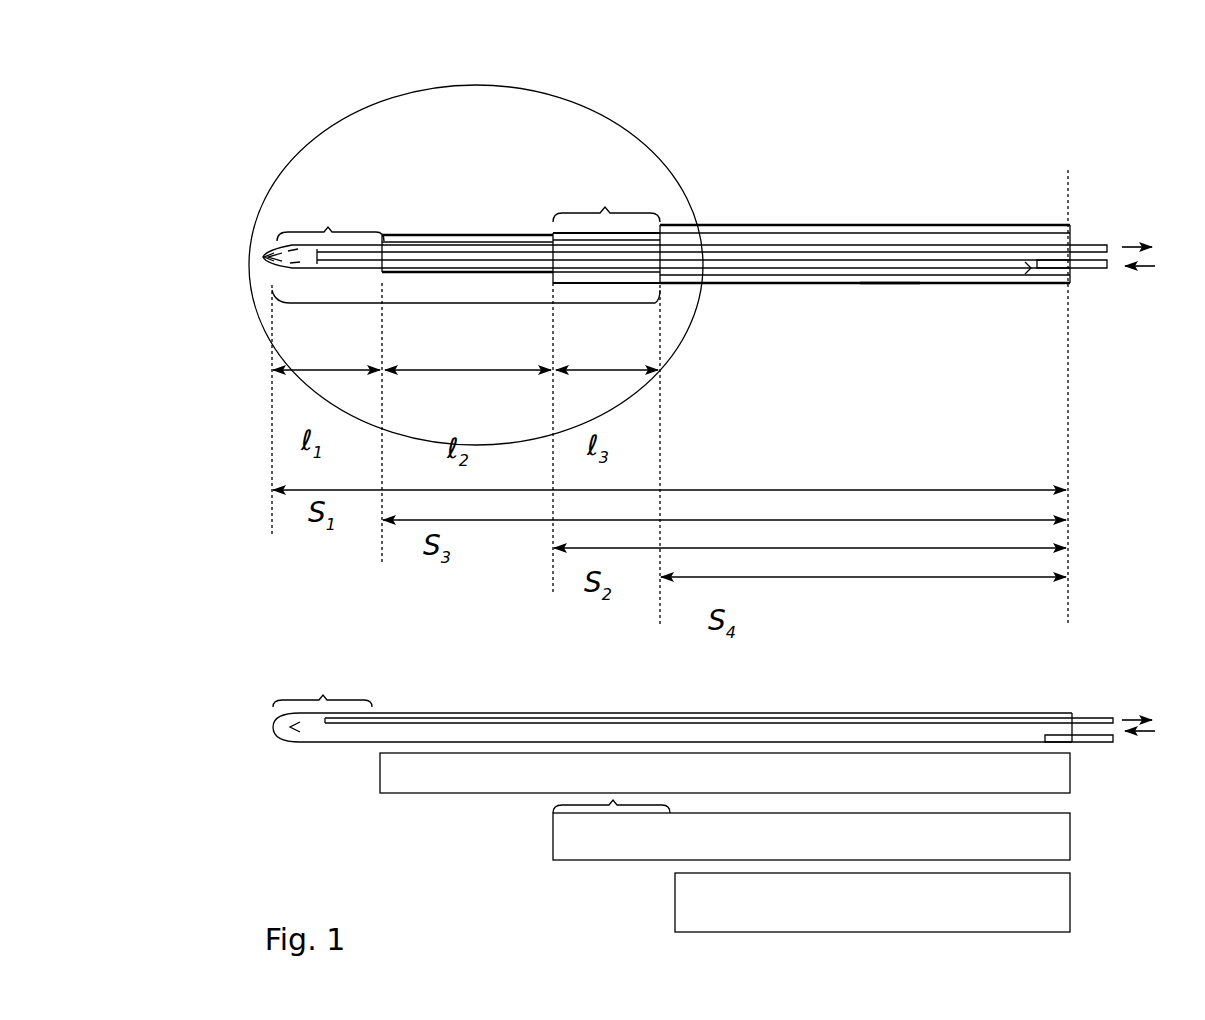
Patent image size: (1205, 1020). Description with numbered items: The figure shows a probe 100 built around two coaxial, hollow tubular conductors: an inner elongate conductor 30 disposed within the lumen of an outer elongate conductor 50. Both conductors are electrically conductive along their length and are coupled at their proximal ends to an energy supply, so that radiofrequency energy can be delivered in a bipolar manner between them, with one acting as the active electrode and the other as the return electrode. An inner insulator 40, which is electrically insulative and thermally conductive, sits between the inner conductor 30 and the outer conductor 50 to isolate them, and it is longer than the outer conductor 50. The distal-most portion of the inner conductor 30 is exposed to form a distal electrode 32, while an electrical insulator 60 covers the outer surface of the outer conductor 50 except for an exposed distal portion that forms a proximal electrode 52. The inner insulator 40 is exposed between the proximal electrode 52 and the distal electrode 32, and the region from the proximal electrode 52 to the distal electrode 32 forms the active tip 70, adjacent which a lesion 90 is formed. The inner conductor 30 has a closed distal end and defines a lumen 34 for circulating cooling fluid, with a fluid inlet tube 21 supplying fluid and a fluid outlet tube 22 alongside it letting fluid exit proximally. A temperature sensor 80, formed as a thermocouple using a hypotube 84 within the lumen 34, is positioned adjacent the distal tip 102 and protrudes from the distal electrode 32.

The fluid inlet tube 21 is at (1078, 269).
The fluid outlet tube 22 is at (1074, 243).
The inner elongate conductor 30 is at (386, 231).
The distal electrode 32 is at (327, 226).
The lumen 34 is at (1028, 270).
The inner insulator 40 is at (487, 233).
The outer elongate conductor 50 is at (708, 226).
The proximal electrode 52 is at (608, 207).
The electrical insulator 60 is at (788, 225).
The active tip 70 is at (462, 305).
The temperature sensor 80 is at (262, 250).
The hypotube 84 is at (892, 285).
The lesion 90 is at (260, 265).
The probe 100 is at (908, 212).
The distal tip 102 is at (272, 259).